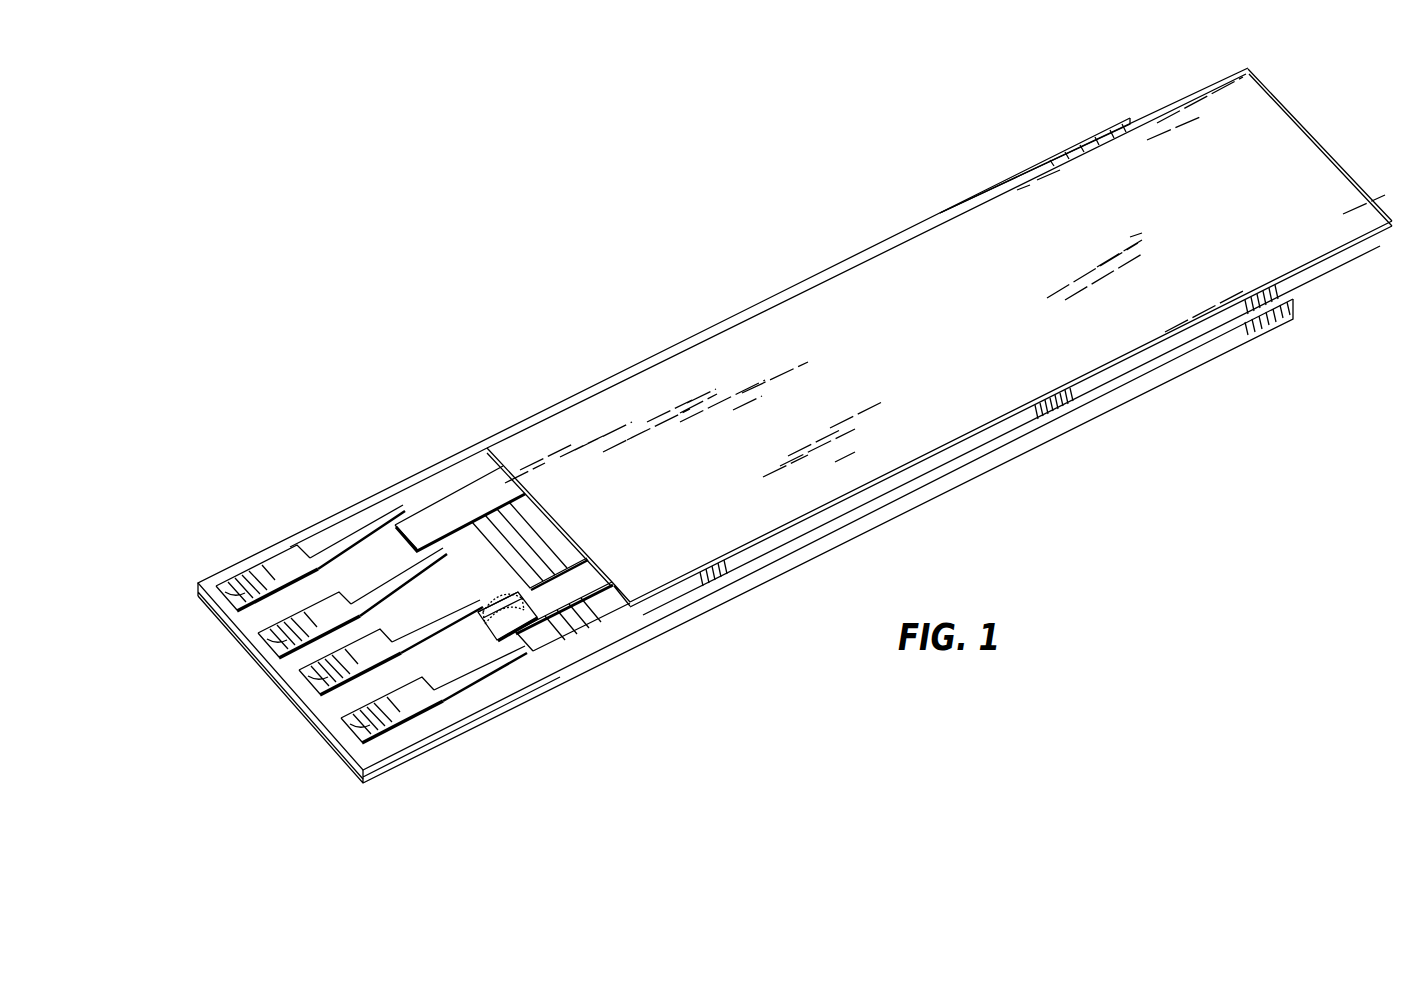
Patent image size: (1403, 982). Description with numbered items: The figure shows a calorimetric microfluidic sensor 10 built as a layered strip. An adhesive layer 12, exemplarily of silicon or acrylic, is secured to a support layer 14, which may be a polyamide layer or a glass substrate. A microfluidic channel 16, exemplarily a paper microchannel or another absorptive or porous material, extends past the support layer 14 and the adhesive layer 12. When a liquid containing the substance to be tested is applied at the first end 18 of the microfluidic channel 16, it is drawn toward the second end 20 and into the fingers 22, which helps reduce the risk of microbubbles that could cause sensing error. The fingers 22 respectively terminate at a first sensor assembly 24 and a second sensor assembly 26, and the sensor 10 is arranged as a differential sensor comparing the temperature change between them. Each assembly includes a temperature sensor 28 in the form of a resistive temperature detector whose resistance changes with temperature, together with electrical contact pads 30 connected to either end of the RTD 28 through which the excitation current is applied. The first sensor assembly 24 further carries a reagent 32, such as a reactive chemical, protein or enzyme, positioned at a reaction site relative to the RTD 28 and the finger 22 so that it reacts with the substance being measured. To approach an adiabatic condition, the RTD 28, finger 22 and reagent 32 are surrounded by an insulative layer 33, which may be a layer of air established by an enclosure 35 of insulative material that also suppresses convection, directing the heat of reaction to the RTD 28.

The microfluidic sensor 10 is at (720, 200).
The adhesive layer 12 is at (198, 583).
The support layer 14 is at (363, 783).
The microfluidic channel 16 is at (906, 346).
The first end 18 is at (1283, 140).
The second end 20 is at (617, 413).
The fingers 22 is at (540, 597).
The first sensor assembly 24 is at (560, 625).
The second sensor assembly 26 is at (428, 500).
The temperature sensor 28 is at (403, 502).
The electrical contact pads 30 is at (222, 598).
The reagent 32 is at (517, 613).
The insulative layer 33 is at (482, 628).
The enclosure 35 is at (500, 597).